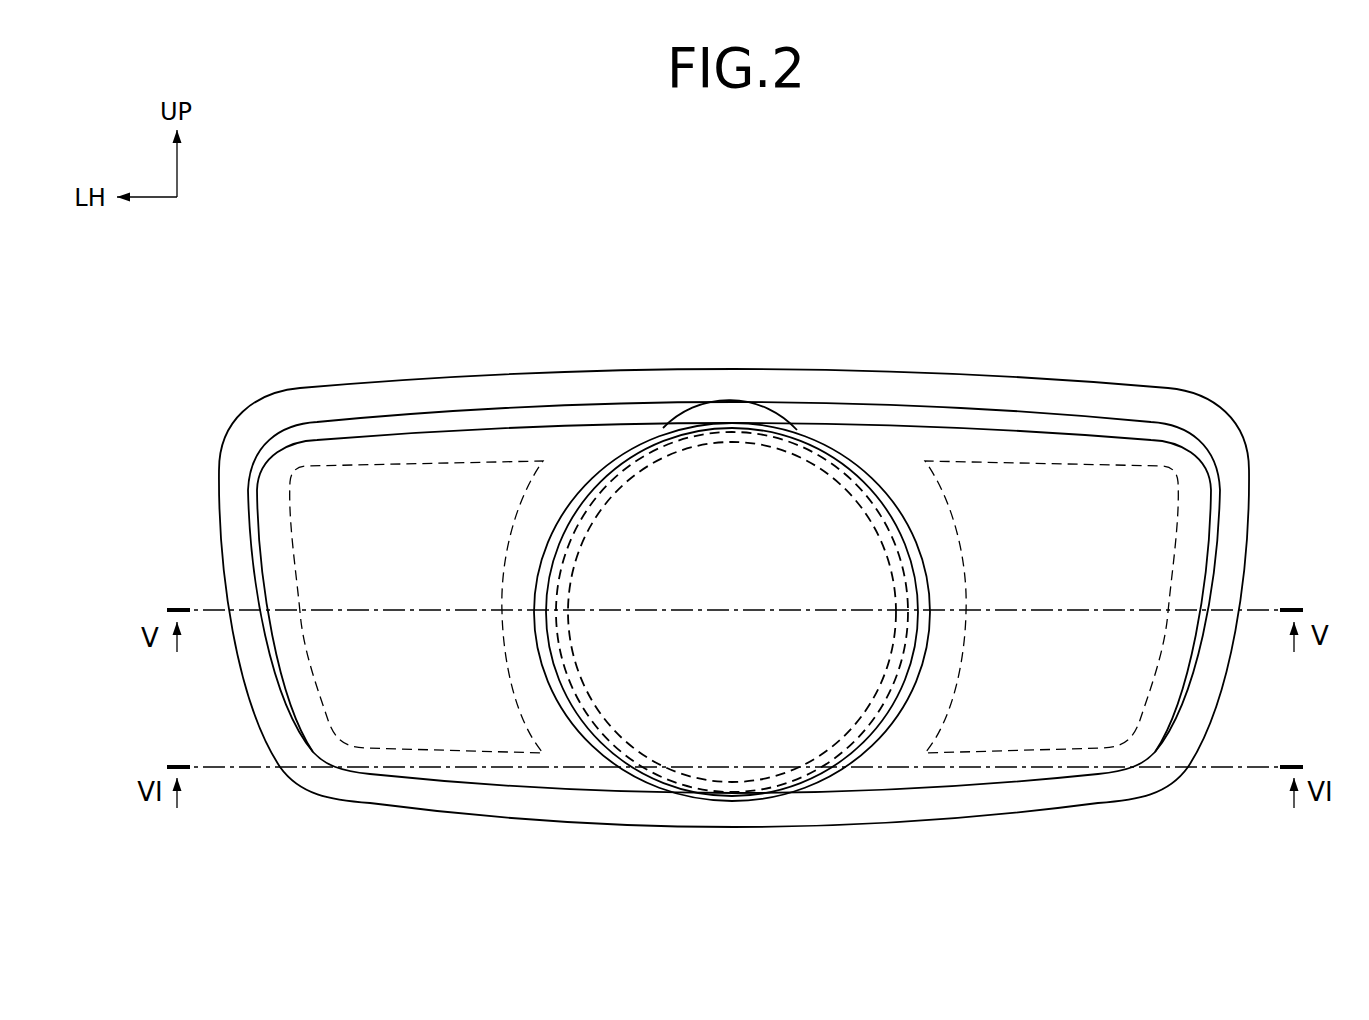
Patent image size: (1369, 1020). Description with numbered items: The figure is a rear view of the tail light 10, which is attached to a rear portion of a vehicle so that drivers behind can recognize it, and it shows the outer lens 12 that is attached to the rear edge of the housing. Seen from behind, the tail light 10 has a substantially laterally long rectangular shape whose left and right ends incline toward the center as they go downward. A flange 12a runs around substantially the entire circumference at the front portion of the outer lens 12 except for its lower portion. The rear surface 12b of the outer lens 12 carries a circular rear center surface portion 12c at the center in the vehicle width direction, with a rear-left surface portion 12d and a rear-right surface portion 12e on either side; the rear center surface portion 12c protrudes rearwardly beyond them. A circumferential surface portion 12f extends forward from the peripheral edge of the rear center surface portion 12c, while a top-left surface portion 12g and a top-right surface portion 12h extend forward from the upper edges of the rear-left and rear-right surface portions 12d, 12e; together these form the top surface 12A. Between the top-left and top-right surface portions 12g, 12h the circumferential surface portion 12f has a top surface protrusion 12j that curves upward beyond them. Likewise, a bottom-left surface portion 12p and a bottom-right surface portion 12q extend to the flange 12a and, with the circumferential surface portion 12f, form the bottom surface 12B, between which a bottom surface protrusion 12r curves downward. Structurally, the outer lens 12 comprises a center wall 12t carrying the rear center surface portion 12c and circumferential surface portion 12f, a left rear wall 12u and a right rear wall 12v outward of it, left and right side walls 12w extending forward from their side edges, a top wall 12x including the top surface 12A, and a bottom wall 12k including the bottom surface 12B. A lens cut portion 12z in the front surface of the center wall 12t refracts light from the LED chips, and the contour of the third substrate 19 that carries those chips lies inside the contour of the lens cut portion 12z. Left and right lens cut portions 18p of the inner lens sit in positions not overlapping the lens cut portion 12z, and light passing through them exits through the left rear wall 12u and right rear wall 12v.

The tail light 10 is at (378, 292).
The outer lens 12 is at (506, 388).
The flange 12a is at (1237, 465).
The top surface 12A is at (983, 399).
The bottom surface 12B is at (919, 794).
The rear surface 12b is at (339, 468).
The rear center surface portion 12c is at (730, 460).
The rear-left surface portion 12d is at (423, 708).
The rear-right surface portion 12e is at (1040, 727).
The circumferential surface portion 12f is at (560, 710).
The top-left surface portion 12g is at (558, 422).
The top-right surface portion 12h is at (917, 408).
The top surface protrusion 12j is at (767, 408).
The bottom wall 12k is at (376, 786).
The bottom-left surface portion 12p is at (485, 786).
The bottom-right surface portion 12q is at (865, 791).
The bottom surface protrusion 12r is at (723, 803).
The center wall 12t is at (671, 468).
The left rear wall 12u is at (440, 484).
The right rear wall 12v is at (1039, 489).
The side wall 12w is at (252, 518).
The top wall 12x is at (371, 428).
The lens cut portion 12z is at (667, 778).
The lens cut portion 18p is at (320, 697).
The third substrate 19 is at (780, 775).